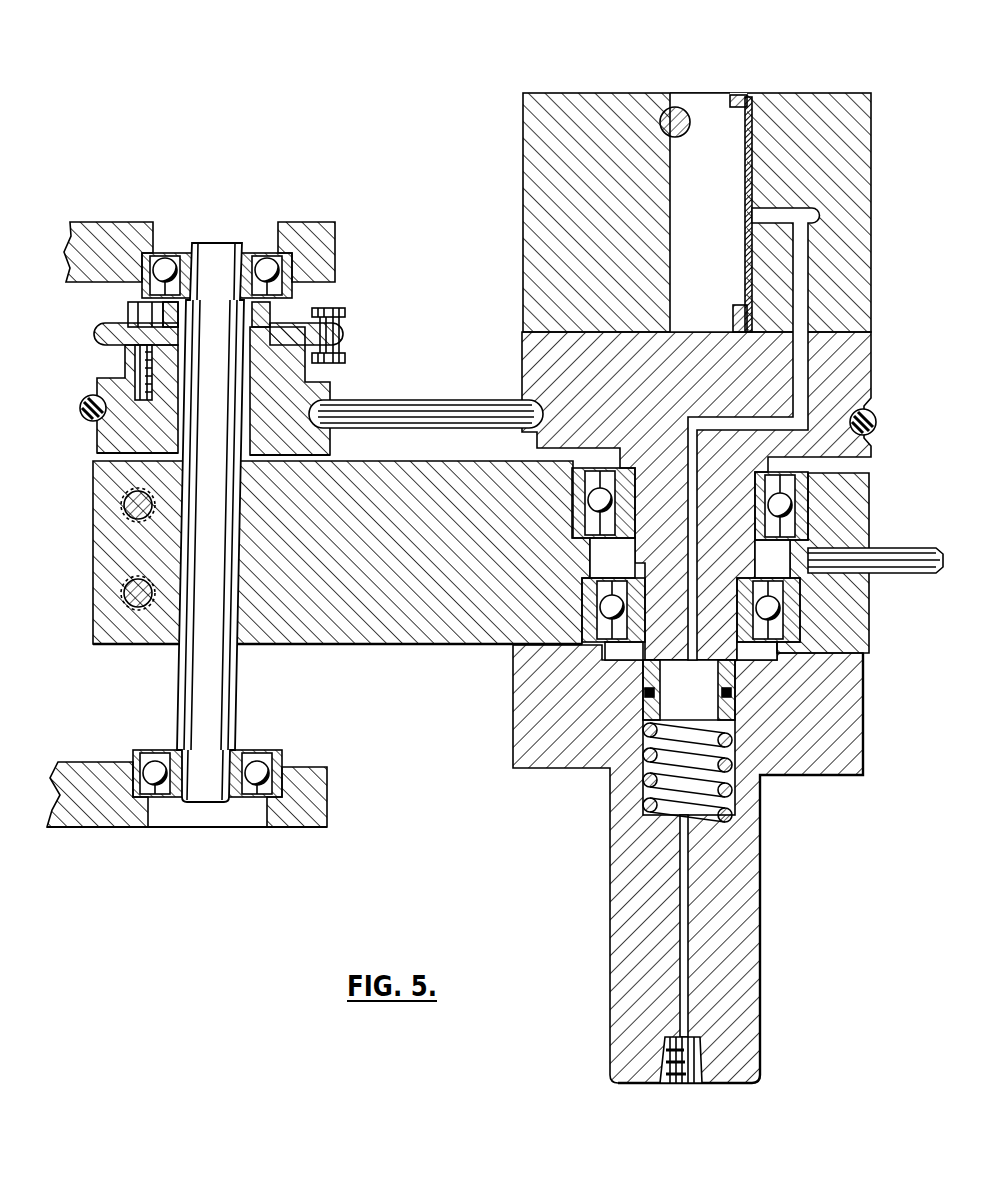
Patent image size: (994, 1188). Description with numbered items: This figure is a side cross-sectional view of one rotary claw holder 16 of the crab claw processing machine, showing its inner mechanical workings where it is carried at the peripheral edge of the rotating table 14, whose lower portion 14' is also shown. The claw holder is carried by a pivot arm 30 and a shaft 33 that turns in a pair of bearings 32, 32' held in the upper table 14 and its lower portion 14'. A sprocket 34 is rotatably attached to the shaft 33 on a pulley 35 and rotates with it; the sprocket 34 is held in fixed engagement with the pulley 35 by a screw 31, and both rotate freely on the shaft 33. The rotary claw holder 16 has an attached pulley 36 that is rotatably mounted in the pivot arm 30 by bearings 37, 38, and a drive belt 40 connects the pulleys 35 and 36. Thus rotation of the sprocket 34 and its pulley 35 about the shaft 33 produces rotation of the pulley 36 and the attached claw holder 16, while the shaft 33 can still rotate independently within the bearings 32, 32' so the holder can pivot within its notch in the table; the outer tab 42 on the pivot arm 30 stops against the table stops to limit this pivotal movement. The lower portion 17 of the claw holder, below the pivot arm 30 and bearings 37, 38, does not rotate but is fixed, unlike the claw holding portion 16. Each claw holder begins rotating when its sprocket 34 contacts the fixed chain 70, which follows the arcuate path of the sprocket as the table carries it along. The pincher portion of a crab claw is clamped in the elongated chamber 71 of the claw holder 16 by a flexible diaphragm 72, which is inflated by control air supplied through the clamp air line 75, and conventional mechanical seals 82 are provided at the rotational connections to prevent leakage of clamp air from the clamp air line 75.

The rotating table 14 is at (199, 234).
The lower portion of table 14' is at (187, 814).
The rotary claw holder 16 is at (866, 142).
The lower portion of rotary claw holder 17 is at (526, 727).
The pivot arm 30 is at (860, 493).
The screw 31 is at (128, 312).
The bearing 32 is at (217, 237).
The bearing 32' is at (207, 809).
The shaft 33 is at (219, 701).
The sprocket 34 is at (100, 335).
The pulley 35 is at (304, 382).
The pulley 36 is at (526, 388).
The bearing 37 is at (578, 502).
The bearing 38 is at (790, 607).
The drive belt 40 is at (88, 400).
The outer tab 42 is at (898, 560).
The chain 70 is at (343, 312).
The chamber 71 is at (700, 175).
The flexible diaphragm 72 is at (748, 128).
The clamp air line 75 is at (810, 289).
The mechanical seal 82 is at (652, 698).